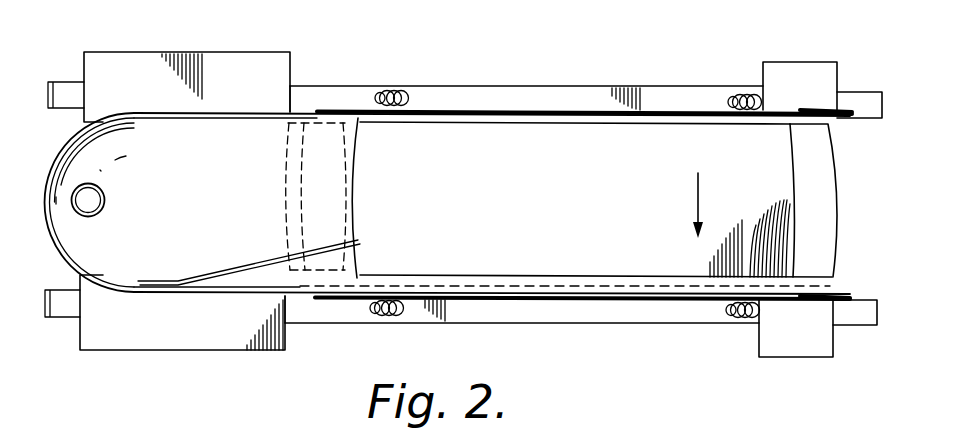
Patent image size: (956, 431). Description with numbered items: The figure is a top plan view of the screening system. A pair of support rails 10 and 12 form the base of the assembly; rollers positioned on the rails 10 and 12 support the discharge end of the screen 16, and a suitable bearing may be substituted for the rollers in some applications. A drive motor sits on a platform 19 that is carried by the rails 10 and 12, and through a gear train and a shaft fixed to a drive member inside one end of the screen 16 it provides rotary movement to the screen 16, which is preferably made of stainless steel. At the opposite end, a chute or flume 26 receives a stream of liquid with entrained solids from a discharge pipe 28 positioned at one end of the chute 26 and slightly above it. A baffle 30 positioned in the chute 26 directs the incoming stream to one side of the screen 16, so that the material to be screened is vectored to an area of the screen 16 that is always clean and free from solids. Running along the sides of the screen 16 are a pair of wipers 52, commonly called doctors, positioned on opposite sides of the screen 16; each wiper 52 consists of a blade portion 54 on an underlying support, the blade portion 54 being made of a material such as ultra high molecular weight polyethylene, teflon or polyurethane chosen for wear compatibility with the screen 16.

The support rail 10 is at (895, 280).
The support rail 12 is at (852, 95).
The screen 16 is at (582, 160).
The platform 19 is at (163, 335).
The chute 26 is at (217, 113).
The discharge pipe 28 is at (106, 200).
The baffle 30 is at (234, 245).
The wiper 52 is at (553, 104).
The blade portion 54 is at (835, 127).